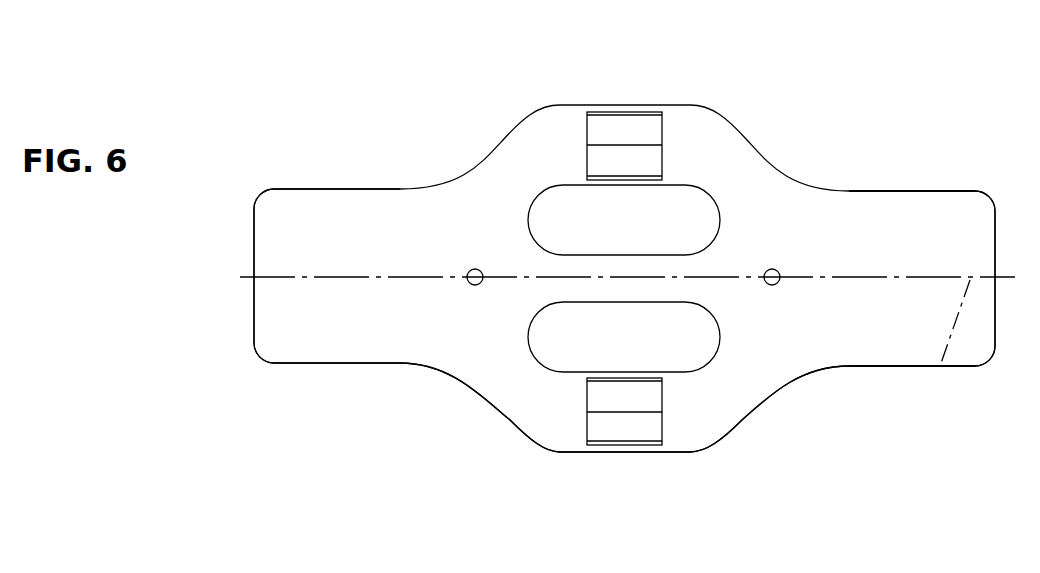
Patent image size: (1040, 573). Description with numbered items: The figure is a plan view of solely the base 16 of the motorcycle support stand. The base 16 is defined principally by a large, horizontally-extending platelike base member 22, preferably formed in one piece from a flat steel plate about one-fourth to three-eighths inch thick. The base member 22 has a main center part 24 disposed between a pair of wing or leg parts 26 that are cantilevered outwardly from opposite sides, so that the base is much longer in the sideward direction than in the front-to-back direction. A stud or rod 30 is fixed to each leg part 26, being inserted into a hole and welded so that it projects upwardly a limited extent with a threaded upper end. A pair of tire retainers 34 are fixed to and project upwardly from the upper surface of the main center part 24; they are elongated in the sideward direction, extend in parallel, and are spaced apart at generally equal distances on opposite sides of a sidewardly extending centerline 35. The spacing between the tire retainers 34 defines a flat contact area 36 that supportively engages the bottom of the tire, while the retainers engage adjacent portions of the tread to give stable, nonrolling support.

The base 16 is at (243, 189).
The base member 22 is at (897, 196).
The main center part 24 is at (540, 402).
The leg parts 26 is at (294, 318).
The rod 30 is at (475, 286).
The tire retainers 34 is at (614, 128).
The centerline 35 is at (938, 372).
The contact area 36 is at (528, 260).